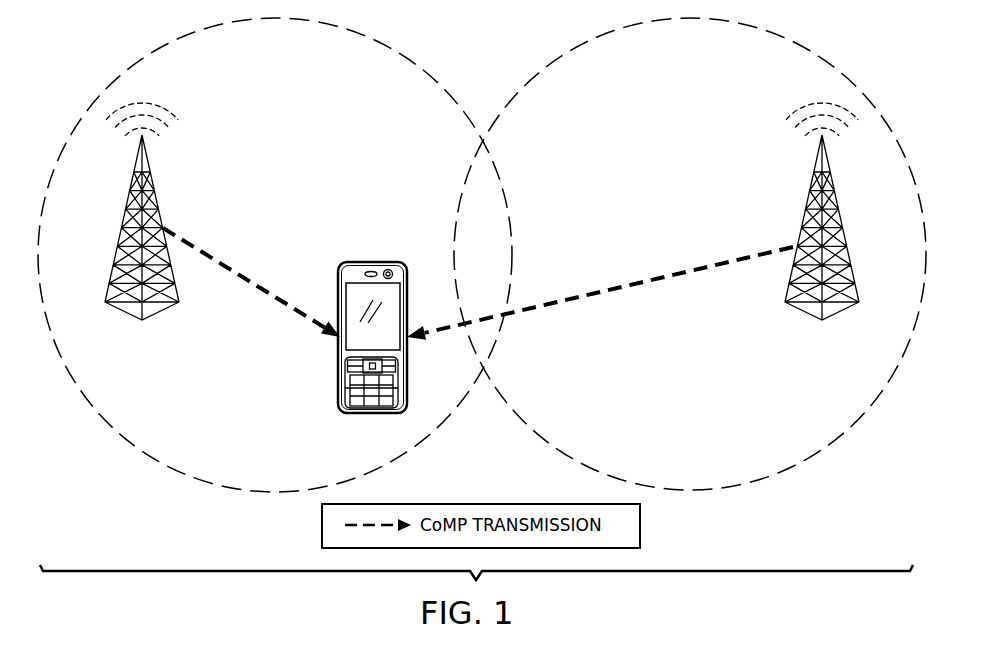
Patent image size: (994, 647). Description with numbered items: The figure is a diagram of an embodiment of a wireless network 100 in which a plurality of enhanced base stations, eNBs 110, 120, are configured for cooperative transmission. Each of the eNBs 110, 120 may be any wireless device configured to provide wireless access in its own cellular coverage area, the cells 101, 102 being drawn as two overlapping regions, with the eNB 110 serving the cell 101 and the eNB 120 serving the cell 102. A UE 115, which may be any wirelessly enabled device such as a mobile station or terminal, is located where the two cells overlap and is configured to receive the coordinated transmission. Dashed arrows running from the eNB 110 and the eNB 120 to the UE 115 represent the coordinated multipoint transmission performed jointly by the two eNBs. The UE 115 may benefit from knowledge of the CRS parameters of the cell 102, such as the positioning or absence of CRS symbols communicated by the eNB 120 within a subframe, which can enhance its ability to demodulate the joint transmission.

The wireless network 100 is at (104, 58).
The cellular coverage area 101 is at (295, 78).
The cellular coverage area 102 is at (712, 78).
The enhanced base station 110 is at (120, 227).
The UE 115 is at (372, 262).
The enhanced base station 120 is at (842, 225).